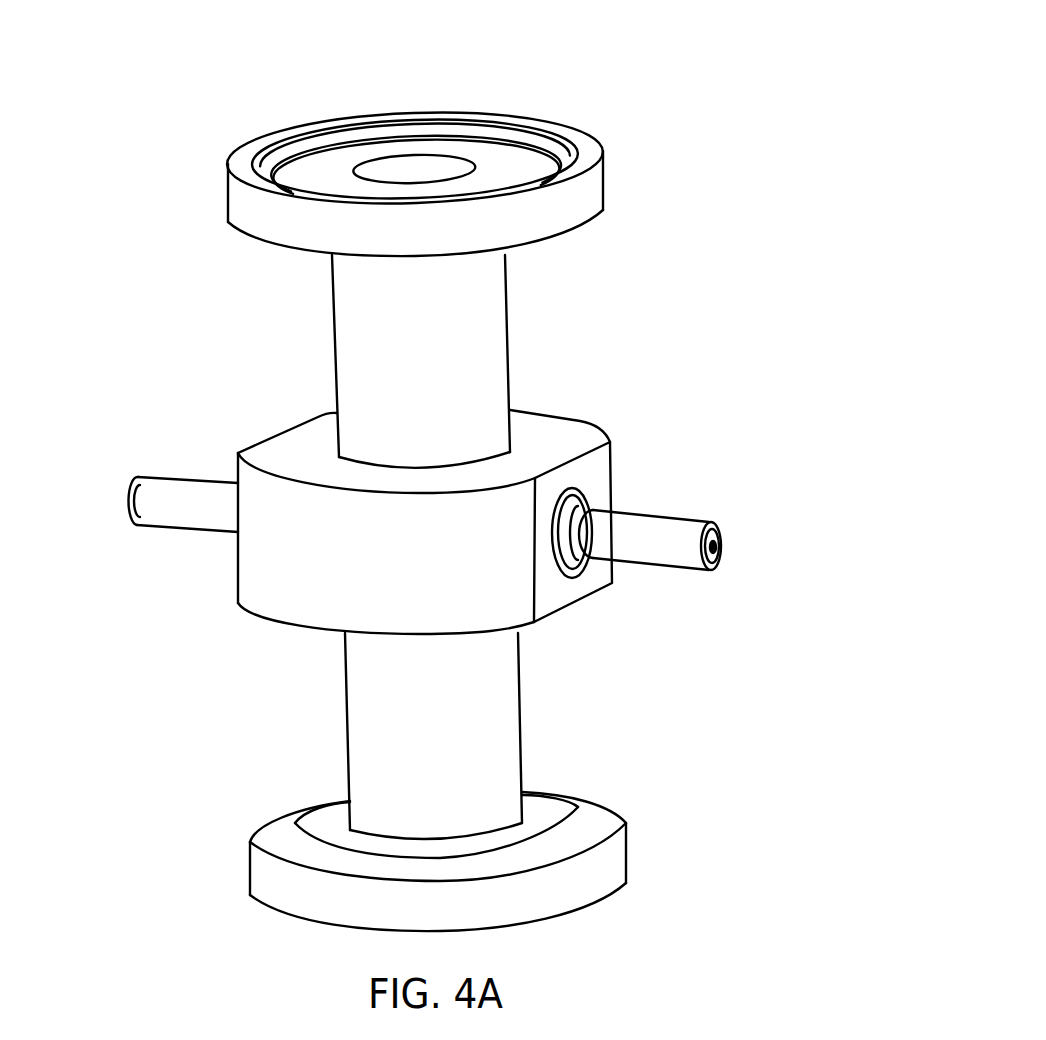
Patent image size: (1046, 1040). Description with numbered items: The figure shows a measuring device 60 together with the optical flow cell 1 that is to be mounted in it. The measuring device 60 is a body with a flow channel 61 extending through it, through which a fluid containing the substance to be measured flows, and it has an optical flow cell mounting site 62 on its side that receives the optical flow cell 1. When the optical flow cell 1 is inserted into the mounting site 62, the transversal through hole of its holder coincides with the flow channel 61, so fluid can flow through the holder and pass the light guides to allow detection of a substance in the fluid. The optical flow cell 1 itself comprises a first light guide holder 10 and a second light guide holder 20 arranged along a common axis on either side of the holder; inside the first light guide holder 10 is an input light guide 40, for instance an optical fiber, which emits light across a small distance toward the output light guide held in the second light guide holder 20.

The optical flow cell 1 is at (687, 523).
The first light guide holder 10 is at (667, 552).
The second light guide holder 20 is at (172, 508).
The input light guide 40 is at (723, 544).
The measuring device 60 is at (607, 82).
The flow channel 61 is at (417, 167).
The optical flow cell mounting site 62 is at (587, 486).